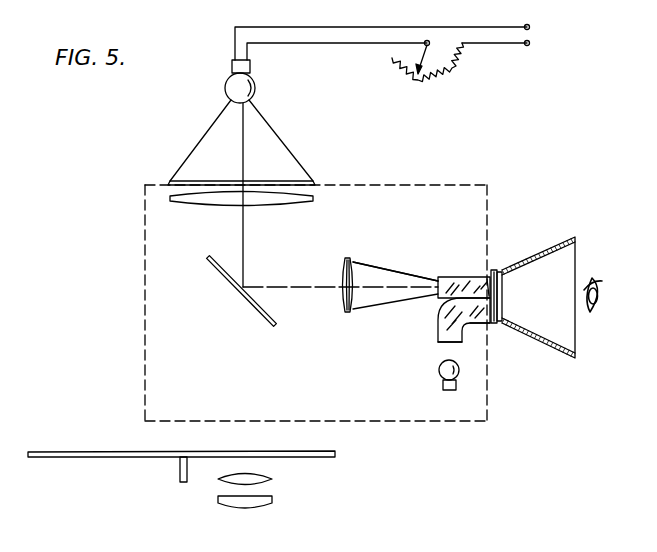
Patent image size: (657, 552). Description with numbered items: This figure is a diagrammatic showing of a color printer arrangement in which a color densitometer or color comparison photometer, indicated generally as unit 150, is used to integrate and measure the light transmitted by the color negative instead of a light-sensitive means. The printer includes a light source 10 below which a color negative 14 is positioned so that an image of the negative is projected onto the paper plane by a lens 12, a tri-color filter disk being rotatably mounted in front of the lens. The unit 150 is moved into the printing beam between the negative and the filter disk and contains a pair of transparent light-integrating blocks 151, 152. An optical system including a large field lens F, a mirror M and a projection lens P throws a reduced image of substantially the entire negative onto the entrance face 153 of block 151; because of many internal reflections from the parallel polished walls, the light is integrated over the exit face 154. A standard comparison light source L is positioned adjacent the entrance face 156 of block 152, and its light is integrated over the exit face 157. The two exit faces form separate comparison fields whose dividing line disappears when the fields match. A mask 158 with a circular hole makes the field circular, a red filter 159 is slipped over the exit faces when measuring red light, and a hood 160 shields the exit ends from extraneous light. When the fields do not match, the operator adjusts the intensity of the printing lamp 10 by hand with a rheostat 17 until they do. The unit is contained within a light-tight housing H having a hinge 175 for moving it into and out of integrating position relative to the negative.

The light source 10 is at (254, 82).
The lens 12 is at (272, 481).
The color negative 14 is at (316, 184).
The rheostat 17 is at (452, 72).
The color densitometer 150 is at (490, 185).
The light-integrating block 151 is at (442, 276).
The light-integrating block 152 is at (444, 311).
The entrance face 153 is at (438, 279).
The exit face 154 is at (484, 278).
The entrance face 156 is at (445, 343).
The exit face 157 is at (483, 324).
The mask 158 is at (496, 324).
The red filter 159 is at (499, 271).
The hood 160 is at (566, 240).
The hinge 175 is at (489, 421).
The field lens F is at (303, 202).
The mirror M is at (252, 304).
The projection lens P is at (346, 313).
The standard comparison light source L is at (441, 376).
The light-tight housing H is at (452, 423).